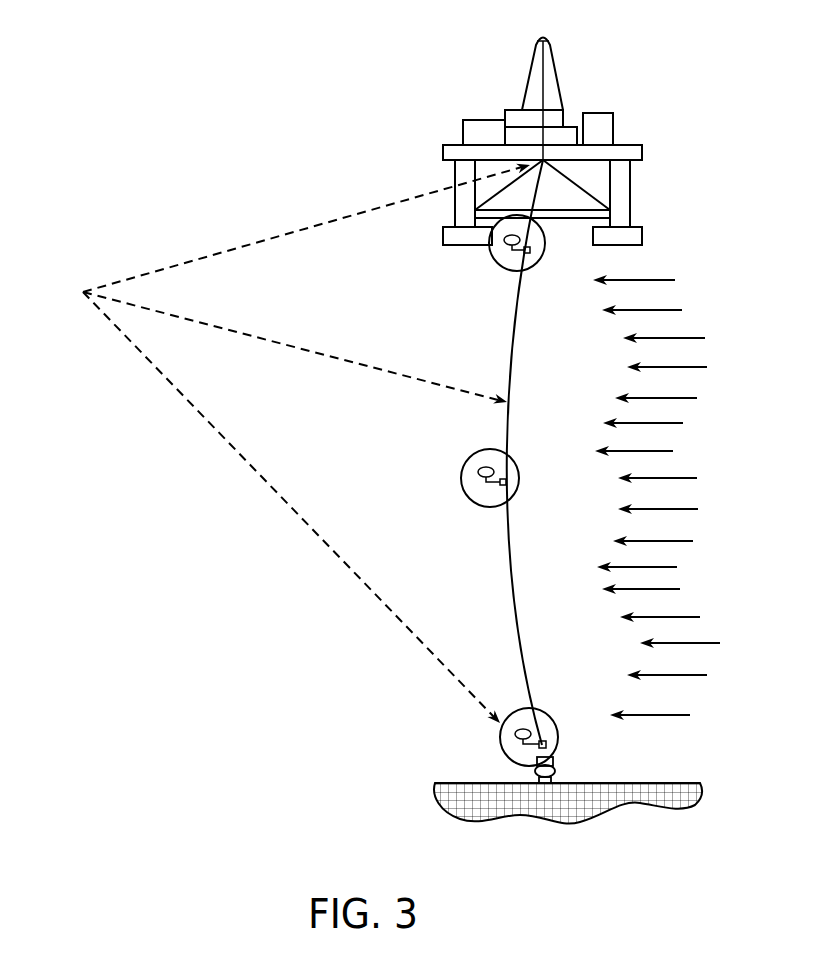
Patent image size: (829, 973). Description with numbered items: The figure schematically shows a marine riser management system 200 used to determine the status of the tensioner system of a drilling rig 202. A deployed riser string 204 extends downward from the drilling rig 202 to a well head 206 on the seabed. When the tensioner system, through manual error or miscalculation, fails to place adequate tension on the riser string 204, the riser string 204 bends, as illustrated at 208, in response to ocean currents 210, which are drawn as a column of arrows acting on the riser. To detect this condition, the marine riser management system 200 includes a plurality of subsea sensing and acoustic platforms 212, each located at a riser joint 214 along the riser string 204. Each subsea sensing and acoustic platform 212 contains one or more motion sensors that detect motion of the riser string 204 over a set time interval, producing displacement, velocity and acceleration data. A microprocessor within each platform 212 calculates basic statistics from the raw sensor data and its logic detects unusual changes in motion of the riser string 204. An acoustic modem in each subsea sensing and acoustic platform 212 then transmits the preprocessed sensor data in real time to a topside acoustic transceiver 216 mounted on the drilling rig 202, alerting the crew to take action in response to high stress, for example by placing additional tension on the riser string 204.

The marine riser management system 200 is at (206, 182).
The drilling rig 202 is at (632, 145).
The deployed riser string 204 is at (512, 365).
The well head 206 is at (535, 775).
The bend of the riser string 208 is at (281, 443).
The ocean currents 210 is at (658, 279).
The subsea sensing and acoustic platform 212 is at (490, 260).
The riser joint 214 is at (531, 256).
The topside acoustic transceiver 216 is at (558, 60).